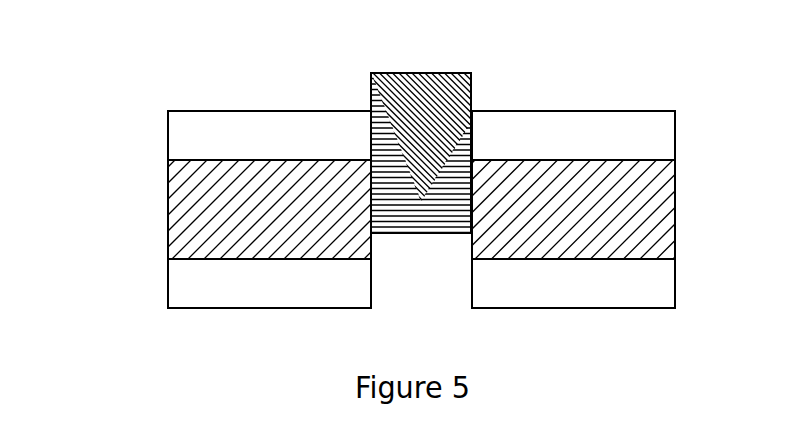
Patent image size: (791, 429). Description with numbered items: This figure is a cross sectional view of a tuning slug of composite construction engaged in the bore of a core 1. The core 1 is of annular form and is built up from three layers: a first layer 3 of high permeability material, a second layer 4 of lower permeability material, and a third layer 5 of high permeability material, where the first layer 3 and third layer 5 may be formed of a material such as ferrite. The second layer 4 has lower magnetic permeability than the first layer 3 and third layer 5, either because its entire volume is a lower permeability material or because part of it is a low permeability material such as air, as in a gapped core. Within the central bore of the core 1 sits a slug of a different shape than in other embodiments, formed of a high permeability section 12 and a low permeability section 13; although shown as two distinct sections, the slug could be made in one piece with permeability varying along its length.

The core 1 is at (67, 62).
The first layer 3 is at (198, 300).
The second layer 4 is at (200, 230).
The third layer 5 is at (200, 145).
The high permeability section 12 is at (442, 128).
The low permeability section 13 is at (425, 217).